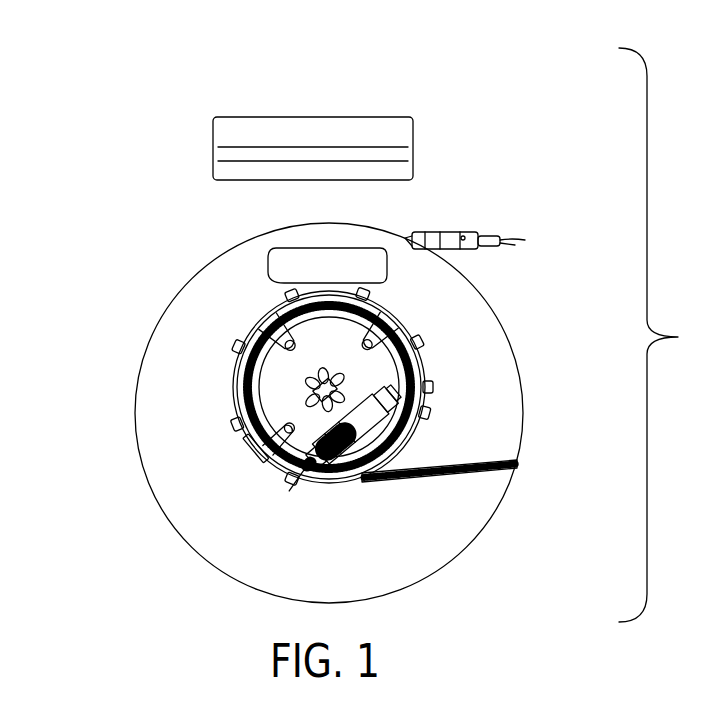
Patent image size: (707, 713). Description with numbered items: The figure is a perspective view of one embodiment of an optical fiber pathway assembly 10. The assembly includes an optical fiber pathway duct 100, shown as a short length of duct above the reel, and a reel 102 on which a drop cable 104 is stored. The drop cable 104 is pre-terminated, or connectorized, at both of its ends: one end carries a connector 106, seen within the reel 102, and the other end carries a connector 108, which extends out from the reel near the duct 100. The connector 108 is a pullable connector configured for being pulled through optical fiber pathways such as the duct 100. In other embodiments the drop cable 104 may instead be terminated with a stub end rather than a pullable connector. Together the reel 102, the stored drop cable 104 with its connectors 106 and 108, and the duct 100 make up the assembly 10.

The optical fiber pathway assembly 10 is at (66, 236).
The optical fiber pathway duct 100 is at (393, 99).
The reel 102 is at (552, 401).
The drop cable 104 is at (410, 343).
The connector 106 is at (378, 418).
The connector 108 is at (475, 232).